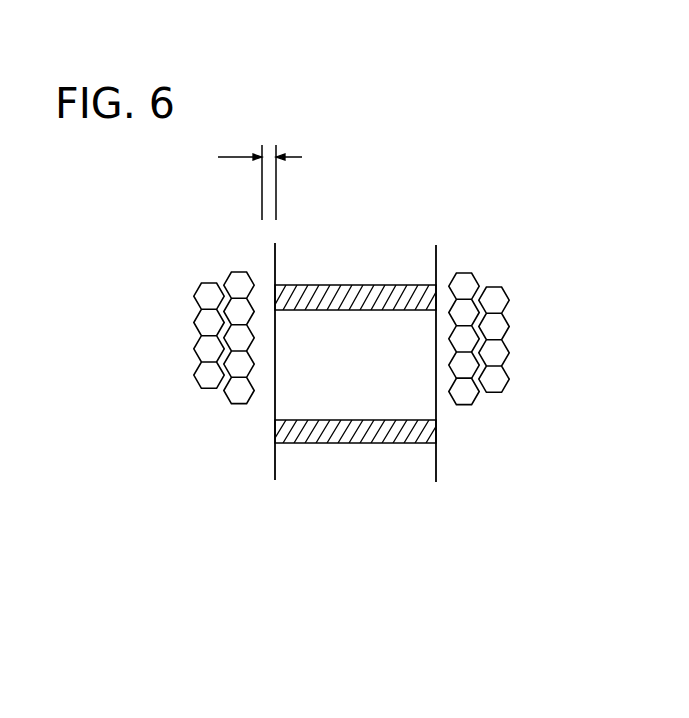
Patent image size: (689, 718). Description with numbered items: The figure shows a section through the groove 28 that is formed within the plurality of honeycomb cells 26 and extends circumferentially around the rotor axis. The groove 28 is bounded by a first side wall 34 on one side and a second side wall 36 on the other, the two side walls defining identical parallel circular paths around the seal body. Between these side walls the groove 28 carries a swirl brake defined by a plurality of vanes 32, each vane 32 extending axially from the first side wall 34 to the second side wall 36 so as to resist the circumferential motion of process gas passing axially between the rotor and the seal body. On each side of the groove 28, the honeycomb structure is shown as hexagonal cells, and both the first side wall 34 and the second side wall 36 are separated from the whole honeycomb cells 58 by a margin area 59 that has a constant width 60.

The plurality of honeycomb cells 26 is at (498, 325).
The groove 28 is at (363, 235).
The vane 32 is at (313, 285).
The first side wall 34 is at (275, 258).
The second side wall 36 is at (435, 268).
The whole honeycomb cells 58 is at (465, 408).
The margin area 59 is at (443, 275).
The constant width 60 is at (242, 157).